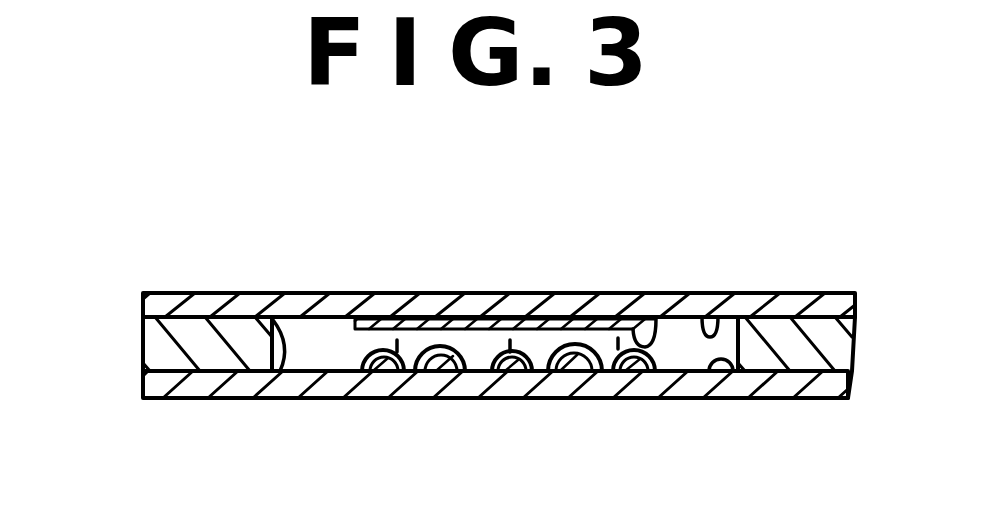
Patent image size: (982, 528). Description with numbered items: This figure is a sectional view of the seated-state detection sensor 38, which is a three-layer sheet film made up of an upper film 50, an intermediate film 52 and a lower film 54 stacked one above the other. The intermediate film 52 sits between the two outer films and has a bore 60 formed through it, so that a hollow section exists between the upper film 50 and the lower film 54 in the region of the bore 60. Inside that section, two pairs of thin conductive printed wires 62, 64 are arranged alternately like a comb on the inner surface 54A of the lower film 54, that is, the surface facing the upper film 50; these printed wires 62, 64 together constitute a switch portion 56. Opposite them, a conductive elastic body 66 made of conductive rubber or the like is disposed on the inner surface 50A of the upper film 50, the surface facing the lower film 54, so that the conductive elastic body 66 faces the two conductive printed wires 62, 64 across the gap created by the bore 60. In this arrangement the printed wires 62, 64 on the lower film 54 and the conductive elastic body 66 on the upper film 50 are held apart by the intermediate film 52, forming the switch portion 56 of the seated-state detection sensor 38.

The seated-state detection sensor 38 is at (816, 266).
The upper film 50 is at (190, 293).
The inner surface of the upper film 50A is at (710, 318).
The intermediate film 52 is at (167, 343).
The lower film 54 is at (164, 383).
The inner surface of the lower film 54A is at (730, 372).
The switch portion 56 is at (352, 352).
The bore 60 is at (278, 372).
The conductive printed wire 62 is at (618, 349).
The conductive printed wire 64 is at (410, 371).
The conductive elastic body 66 is at (650, 317).